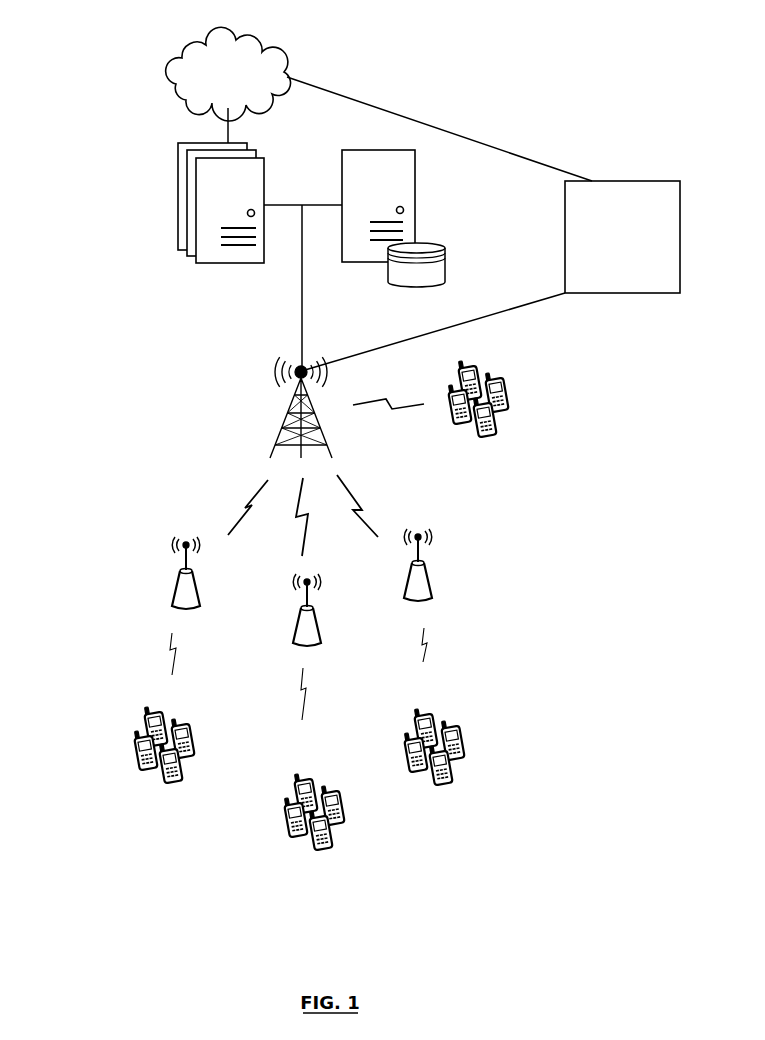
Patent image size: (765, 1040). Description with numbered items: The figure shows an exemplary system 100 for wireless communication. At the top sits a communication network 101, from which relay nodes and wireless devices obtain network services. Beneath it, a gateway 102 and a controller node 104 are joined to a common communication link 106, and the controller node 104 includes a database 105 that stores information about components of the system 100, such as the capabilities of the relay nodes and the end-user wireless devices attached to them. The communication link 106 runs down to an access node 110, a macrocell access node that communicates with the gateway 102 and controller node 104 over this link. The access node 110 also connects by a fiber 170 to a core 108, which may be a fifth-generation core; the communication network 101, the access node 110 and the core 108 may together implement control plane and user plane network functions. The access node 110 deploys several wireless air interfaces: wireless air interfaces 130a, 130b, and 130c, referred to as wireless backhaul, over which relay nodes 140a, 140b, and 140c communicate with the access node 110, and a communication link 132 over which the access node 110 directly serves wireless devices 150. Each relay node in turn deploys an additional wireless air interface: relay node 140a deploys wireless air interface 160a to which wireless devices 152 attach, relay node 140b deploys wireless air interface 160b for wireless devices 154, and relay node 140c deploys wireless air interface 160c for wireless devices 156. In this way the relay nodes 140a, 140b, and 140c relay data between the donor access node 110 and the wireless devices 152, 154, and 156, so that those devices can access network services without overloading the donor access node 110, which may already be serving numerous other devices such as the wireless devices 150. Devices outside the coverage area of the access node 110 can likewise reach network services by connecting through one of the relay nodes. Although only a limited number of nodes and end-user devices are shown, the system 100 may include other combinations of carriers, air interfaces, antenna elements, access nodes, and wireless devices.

The system 100 is at (364, 38).
The communication network 101 is at (214, 82).
The gateway 102 is at (178, 175).
The controller node 104 is at (415, 192).
The database 105 is at (445, 265).
The communication link 106 is at (302, 258).
The 5G core 108 is at (608, 260).
The access node 110 is at (275, 383).
The wireless air interface 130a is at (228, 500).
The wireless air interface 130b is at (296, 538).
The wireless air interface 130c is at (378, 500).
The communication link 132 is at (353, 405).
The relay node 140a is at (178, 580).
The relay node 140b is at (296, 640).
The relay node 140c is at (432, 578).
The wireless devices 150 is at (512, 392).
The wireless devices 152 is at (133, 748).
The wireless devices 154 is at (300, 840).
The wireless devices 156 is at (465, 750).
The wireless air interface 160a is at (168, 650).
The wireless air interface 160b is at (303, 708).
The wireless air interface 160c is at (430, 650).
The fiber 170 is at (545, 299).